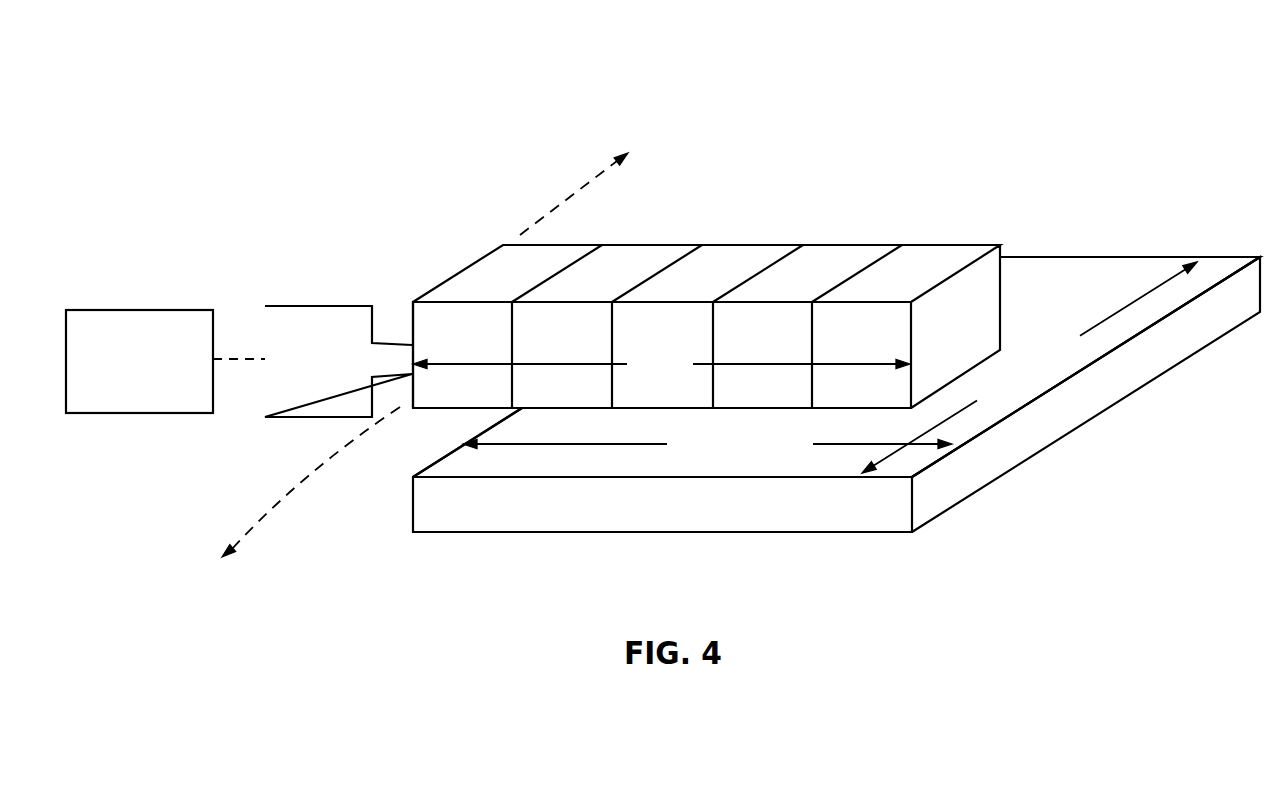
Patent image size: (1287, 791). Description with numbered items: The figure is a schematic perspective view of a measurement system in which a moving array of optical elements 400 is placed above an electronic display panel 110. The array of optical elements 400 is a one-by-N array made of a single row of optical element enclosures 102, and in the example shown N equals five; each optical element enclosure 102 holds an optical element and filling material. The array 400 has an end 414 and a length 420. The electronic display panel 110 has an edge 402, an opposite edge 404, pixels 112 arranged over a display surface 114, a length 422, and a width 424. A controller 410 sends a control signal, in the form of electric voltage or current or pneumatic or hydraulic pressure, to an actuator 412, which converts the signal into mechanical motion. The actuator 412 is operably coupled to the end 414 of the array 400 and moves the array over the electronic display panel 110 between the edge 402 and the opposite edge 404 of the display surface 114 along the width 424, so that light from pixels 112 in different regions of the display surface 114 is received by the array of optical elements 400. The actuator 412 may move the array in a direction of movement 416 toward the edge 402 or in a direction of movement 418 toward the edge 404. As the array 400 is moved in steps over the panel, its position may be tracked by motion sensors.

The controller 410 is at (158, 390).
The actuator 412 is at (337, 388).
The optical element enclosure 102 is at (462, 328).
The array of optical elements 400 is at (768, 244).
The end 414 is at (412, 317).
The direction of movement 416 is at (662, 149).
The direction of movement 418 is at (237, 636).
The length 420 is at (683, 387).
The length 422 is at (800, 456).
The width 424 is at (1029, 367).
The electronic display panel 110 is at (1103, 460).
The display surface 114 is at (762, 582).
The opposite edge 404 is at (842, 477).
The edge 402 is at (1130, 255).
The pixels 112 is at (1085, 293).